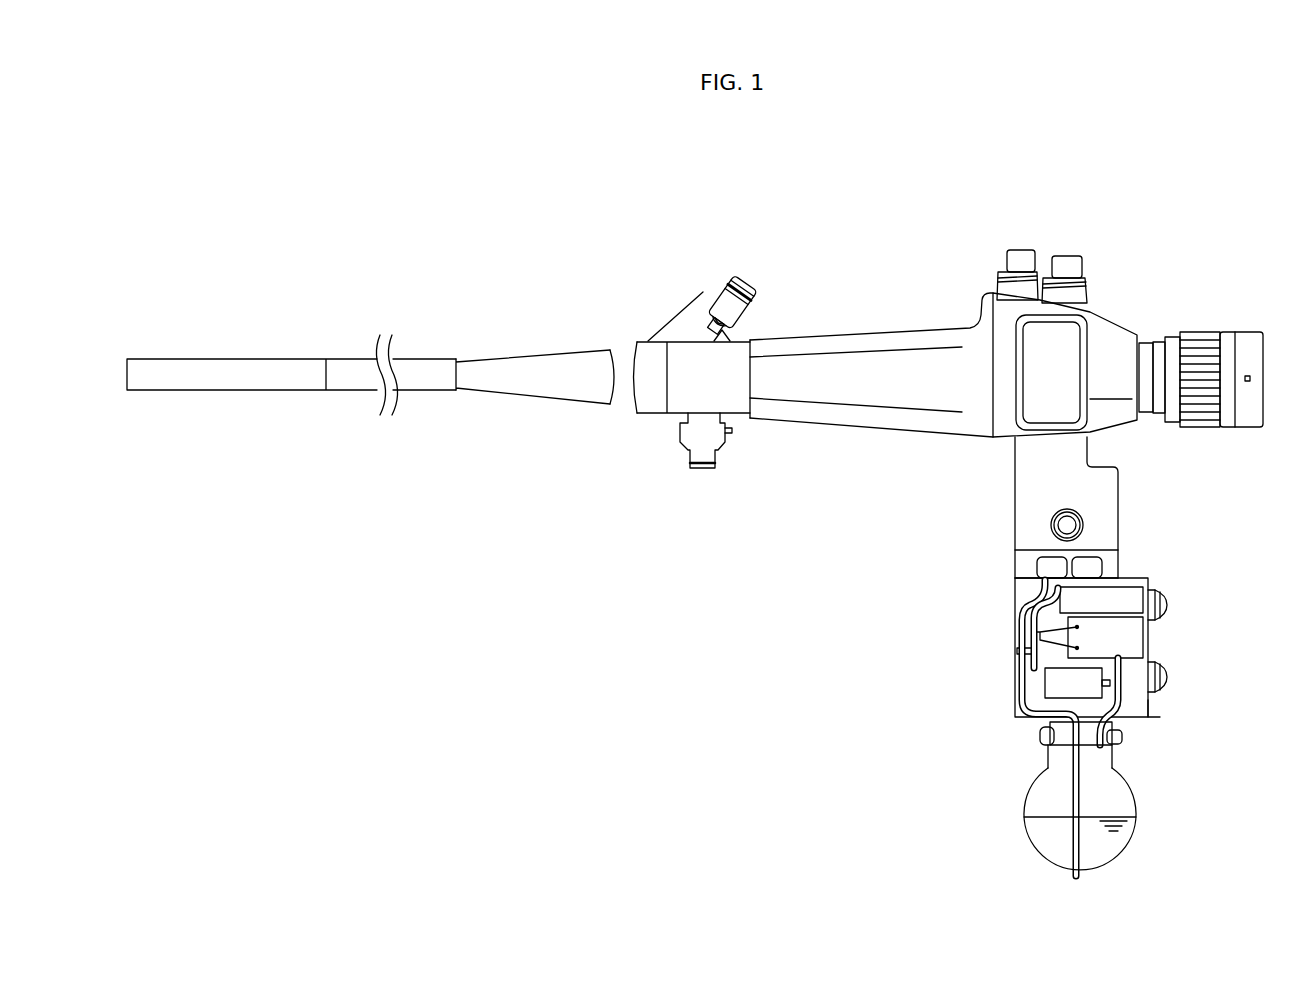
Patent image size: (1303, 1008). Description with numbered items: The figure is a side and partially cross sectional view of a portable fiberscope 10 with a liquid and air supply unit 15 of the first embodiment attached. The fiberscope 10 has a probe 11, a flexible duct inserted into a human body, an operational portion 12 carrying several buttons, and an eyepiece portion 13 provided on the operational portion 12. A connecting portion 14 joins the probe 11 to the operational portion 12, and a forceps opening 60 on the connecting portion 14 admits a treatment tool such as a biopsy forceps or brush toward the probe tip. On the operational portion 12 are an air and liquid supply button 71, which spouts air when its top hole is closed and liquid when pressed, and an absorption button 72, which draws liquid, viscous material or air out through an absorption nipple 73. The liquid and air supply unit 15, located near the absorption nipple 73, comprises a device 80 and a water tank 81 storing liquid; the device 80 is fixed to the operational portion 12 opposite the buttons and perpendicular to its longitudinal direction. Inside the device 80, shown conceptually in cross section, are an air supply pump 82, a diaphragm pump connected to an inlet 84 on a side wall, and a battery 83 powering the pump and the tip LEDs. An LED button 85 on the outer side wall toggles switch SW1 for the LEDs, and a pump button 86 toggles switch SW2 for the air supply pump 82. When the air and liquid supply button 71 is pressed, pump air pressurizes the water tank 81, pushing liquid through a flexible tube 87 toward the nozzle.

The fiberscope 10 is at (900, 241).
The probe 11 is at (125, 472).
The operational portion 12 is at (893, 437).
The eyepiece portion 13 is at (1180, 438).
The connecting portion 14 is at (750, 472).
The liquid and air supply unit 15 is at (948, 578).
The forceps opening 60 is at (758, 296).
The air and liquid supply button 71 is at (1023, 250).
The absorption button 72 is at (1068, 258).
The absorption nipple 73 is at (1084, 527).
The device 80 is at (1150, 712).
The water tank 81 is at (1138, 836).
The air supply pump 82 is at (1137, 640).
The battery 83 is at (1018, 705).
The inlet 84 is at (1018, 650).
The LED button 85 is at (1168, 608).
The pump button 86 is at (1168, 678).
The flexible tube 87 is at (1045, 750).
The switch SW1 is at (1157, 590).
The switch SW2 is at (1150, 693).